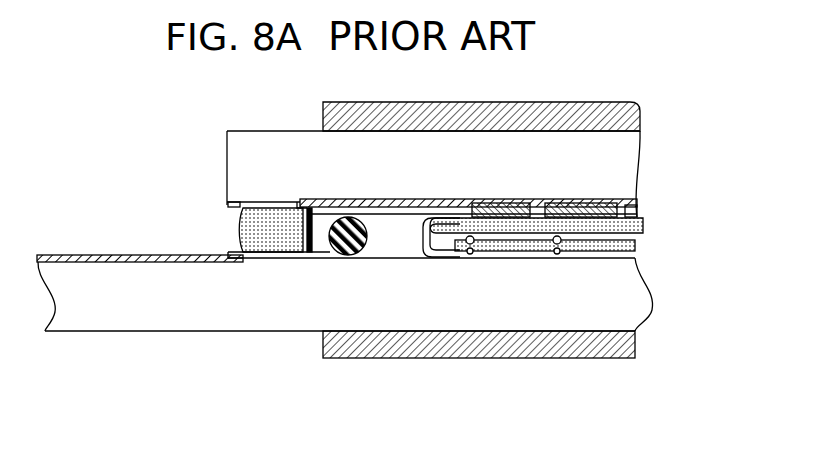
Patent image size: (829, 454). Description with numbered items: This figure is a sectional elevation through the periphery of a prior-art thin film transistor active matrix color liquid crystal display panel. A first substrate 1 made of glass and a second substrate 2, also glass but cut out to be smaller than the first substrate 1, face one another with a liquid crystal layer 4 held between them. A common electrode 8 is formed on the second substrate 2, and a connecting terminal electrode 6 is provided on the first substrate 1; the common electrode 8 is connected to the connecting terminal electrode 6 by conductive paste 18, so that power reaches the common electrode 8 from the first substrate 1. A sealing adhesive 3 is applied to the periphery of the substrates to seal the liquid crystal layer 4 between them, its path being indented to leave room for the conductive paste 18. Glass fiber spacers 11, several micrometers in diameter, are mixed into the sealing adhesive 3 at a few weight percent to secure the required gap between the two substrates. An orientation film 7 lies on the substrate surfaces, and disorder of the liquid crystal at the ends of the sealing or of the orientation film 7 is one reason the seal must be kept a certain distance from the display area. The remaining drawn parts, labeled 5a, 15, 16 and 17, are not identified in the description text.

The first substrate 1 is at (125, 323).
The second substrate 2 is at (263, 153).
The sealing adhesive 3 is at (417, 257).
The liquid crystal layer 4 is at (643, 237).
The coating layer 5a is at (82, 253).
The connecting terminal electrode 6 is at (278, 262).
The orientation film 7 is at (643, 225).
The common electrode 8 is at (233, 207).
The glass fiber spacers 11 is at (368, 245).
The chip component 15 is at (585, 205).
The electronic component 16 is at (542, 205).
The housing 17 is at (628, 115).
The conductive paste 18 is at (259, 228).